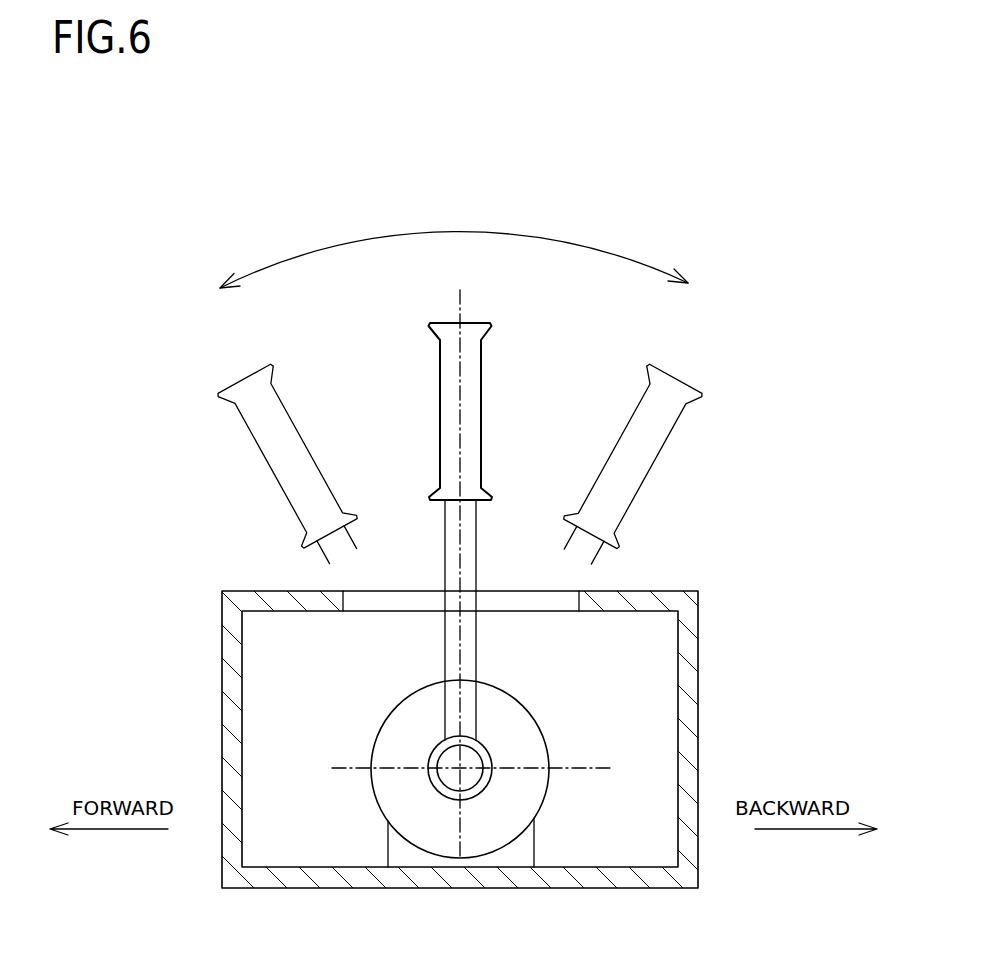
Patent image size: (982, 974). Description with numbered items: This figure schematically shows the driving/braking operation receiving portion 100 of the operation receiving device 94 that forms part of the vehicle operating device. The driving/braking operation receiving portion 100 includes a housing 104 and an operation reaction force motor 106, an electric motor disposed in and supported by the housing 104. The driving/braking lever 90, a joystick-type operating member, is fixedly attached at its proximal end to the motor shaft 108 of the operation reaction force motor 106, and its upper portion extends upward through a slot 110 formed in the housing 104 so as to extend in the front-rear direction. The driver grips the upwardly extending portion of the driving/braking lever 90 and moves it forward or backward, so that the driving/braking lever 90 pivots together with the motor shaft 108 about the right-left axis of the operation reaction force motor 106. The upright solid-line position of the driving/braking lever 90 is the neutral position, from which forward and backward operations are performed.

The driving/braking lever 90 is at (475, 412).
The operation receiving device 94 is at (751, 204).
The driving/braking operation receiving portion 100 is at (731, 544).
The housing 104 is at (693, 680).
The operation reaction force motor 106 is at (518, 725).
The motor shaft 108 is at (475, 762).
The slot 110 is at (364, 600).